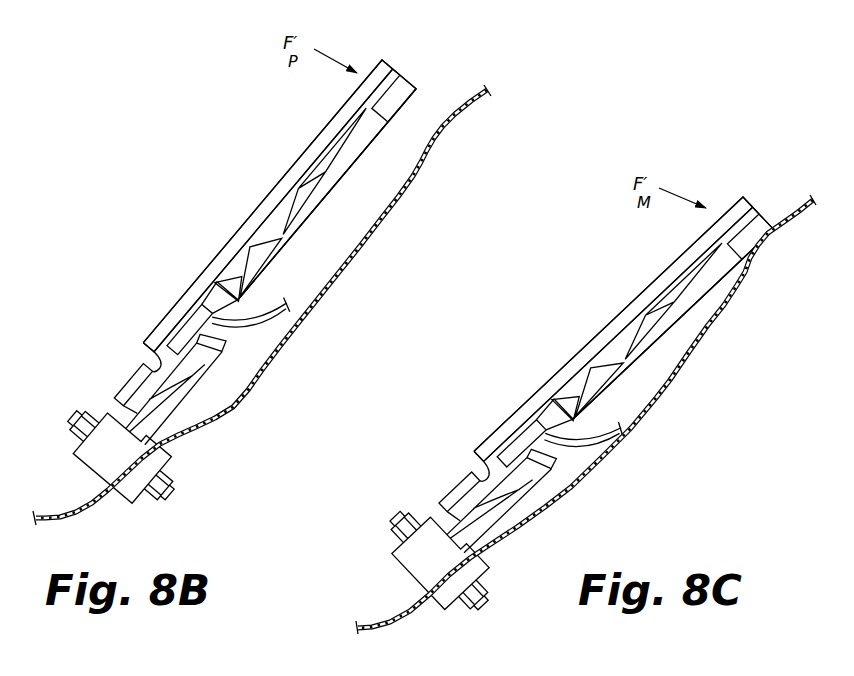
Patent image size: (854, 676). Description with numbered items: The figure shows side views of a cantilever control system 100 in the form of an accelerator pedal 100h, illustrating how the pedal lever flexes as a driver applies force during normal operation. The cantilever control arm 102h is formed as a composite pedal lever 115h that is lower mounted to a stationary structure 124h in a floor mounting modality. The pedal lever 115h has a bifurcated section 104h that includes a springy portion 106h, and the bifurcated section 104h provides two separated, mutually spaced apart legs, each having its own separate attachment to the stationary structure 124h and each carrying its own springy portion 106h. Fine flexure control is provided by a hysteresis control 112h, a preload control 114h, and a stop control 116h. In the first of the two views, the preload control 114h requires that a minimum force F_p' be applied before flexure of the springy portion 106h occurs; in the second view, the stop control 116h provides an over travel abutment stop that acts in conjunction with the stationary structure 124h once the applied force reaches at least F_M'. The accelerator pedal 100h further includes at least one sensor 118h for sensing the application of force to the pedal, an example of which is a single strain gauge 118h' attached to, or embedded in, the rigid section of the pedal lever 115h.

In FIG. 8B, the cantilever control system 100 is at (275, 175).
In FIG. 8C, the cantilever control system 100 is at (606, 312).
In FIG. 8B, the accelerator pedal 100h is at (275, 175).
In FIG. 8C, the accelerator pedal 100h is at (606, 312).
In FIG. 8B, the cantilever control arm 102h is at (299, 234).
In FIG. 8C, the cantilever control arm 102h is at (650, 344).
In FIG. 8B, the composite pedal lever 115h is at (299, 234).
In FIG. 8C, the composite pedal lever 115h is at (650, 344).
In FIG. 8B, the stop control 116h is at (416, 88).
In FIG. 8C, the stop control 116h is at (770, 243).
In FIG. 8B, the sensor 118h is at (191, 326).
In FIG. 8C, the sensor 118h is at (524, 444).
In FIG. 8B, the strain gauge 118h' is at (257, 353).
In FIG. 8C, the strain gauge 118h' is at (588, 465).
In FIG. 8B, the hysteresis control 112h is at (192, 394).
In FIG. 8C, the hysteresis control 112h is at (522, 506).
In FIG. 8B, the preload control 114h is at (125, 372).
In FIG. 8C, the preload control 114h is at (448, 487).
In FIG. 8B, the springy portion 106h is at (122, 393).
In FIG. 8C, the springy portion 106h is at (448, 500).
In FIG. 8B, the bifurcated section 104h is at (122, 410).
In FIG. 8C, the bifurcated section 104h is at (447, 509).
In FIG. 8B, the stationary structure 124h is at (443, 133).
In FIG. 8C, the stationary structure 124h is at (727, 310).